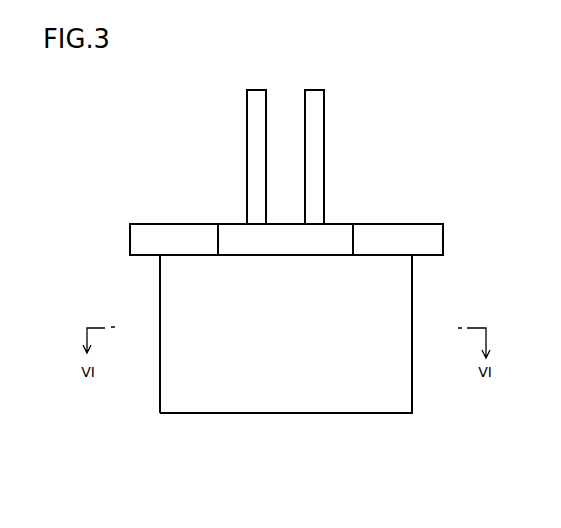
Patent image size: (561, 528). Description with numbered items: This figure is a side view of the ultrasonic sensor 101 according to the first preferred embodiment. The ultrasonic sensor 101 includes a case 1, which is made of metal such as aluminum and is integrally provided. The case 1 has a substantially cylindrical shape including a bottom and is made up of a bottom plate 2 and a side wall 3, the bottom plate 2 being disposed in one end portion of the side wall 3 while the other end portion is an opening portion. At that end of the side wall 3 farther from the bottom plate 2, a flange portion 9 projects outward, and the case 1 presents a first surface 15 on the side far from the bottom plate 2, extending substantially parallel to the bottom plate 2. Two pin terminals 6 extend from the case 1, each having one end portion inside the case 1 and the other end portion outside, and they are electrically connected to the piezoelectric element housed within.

The ultrasonic sensor 101 is at (388, 101).
The pin terminals 6 is at (246, 128).
The first surface 15 is at (388, 223).
The flange portion 9 is at (140, 240).
The side wall 3 is at (160, 388).
The bottom plate 2 is at (212, 413).
The case 1 is at (73, 453).